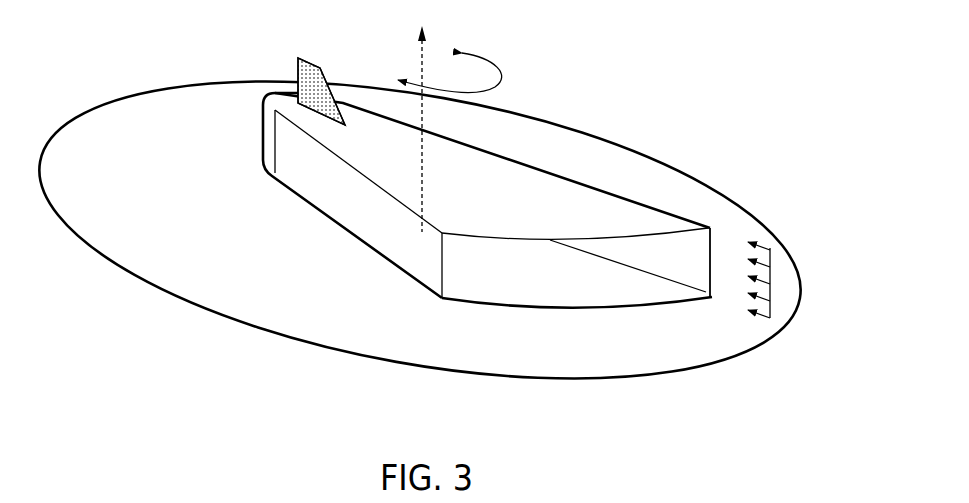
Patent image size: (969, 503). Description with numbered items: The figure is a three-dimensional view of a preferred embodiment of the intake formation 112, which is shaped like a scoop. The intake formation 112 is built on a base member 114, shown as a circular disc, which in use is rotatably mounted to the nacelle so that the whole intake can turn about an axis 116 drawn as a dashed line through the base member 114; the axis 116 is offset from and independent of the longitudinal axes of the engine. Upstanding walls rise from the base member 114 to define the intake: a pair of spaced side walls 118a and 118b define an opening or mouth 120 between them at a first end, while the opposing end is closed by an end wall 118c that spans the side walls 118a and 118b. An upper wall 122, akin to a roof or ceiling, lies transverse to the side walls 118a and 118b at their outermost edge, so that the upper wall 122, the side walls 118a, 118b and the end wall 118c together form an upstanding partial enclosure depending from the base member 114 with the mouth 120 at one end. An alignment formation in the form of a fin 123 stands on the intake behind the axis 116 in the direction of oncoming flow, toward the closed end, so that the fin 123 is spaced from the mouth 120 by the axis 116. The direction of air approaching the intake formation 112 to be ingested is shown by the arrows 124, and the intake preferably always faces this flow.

The intake formation 112 is at (630, 49).
The base member 114 is at (642, 177).
The axis 116 is at (422, 68).
The side wall 118a is at (393, 238).
The side wall 118b is at (688, 262).
The end wall 118c is at (260, 130).
The mouth 120 is at (570, 278).
The upper wall 122 is at (643, 230).
The fin 123 is at (302, 79).
The arrows 124 is at (773, 310).